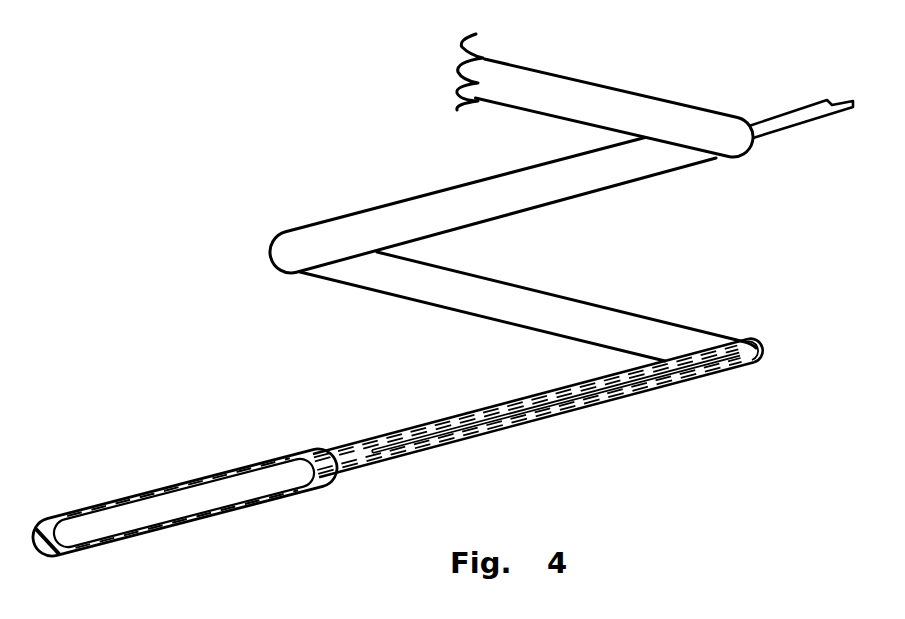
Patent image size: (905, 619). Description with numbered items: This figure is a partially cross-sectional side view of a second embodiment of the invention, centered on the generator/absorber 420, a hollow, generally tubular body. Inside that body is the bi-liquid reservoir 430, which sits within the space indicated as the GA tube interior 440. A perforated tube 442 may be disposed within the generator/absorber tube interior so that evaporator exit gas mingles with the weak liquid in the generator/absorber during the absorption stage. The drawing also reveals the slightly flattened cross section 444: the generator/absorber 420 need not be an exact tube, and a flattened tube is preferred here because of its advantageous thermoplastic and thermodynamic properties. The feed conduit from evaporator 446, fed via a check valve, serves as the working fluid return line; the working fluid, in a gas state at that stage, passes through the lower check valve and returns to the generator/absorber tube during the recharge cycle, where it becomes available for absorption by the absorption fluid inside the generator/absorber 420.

The generator/absorber 420 is at (499, 410).
The bi-liquid reservoir 430 is at (201, 498).
The GA tube interior 440 is at (340, 462).
The perforated tube 442 is at (600, 415).
The slightly flattened cross section 444 is at (758, 345).
The feed conduit from evaporator 446 is at (800, 103).